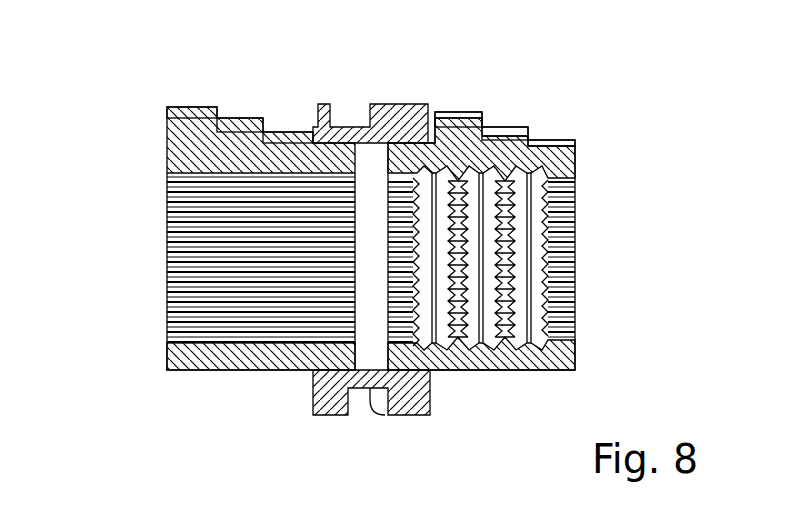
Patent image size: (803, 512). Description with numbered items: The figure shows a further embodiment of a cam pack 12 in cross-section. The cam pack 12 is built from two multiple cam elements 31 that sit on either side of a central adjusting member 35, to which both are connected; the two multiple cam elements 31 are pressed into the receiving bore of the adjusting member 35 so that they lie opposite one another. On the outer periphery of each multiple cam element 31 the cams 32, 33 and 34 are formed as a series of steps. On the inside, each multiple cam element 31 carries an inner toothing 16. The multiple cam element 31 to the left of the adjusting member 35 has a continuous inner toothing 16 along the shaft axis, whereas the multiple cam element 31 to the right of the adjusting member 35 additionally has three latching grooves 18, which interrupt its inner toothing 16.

The cam pack 12 is at (138, 79).
The inner toothing 16 is at (186, 320).
The latching grooves 18 is at (455, 335).
The multiple cam element 31 is at (167, 156).
The cam 32 is at (195, 108).
The cam 33 is at (244, 120).
The cam 34 is at (288, 134).
The adjusting member 35 is at (398, 112).